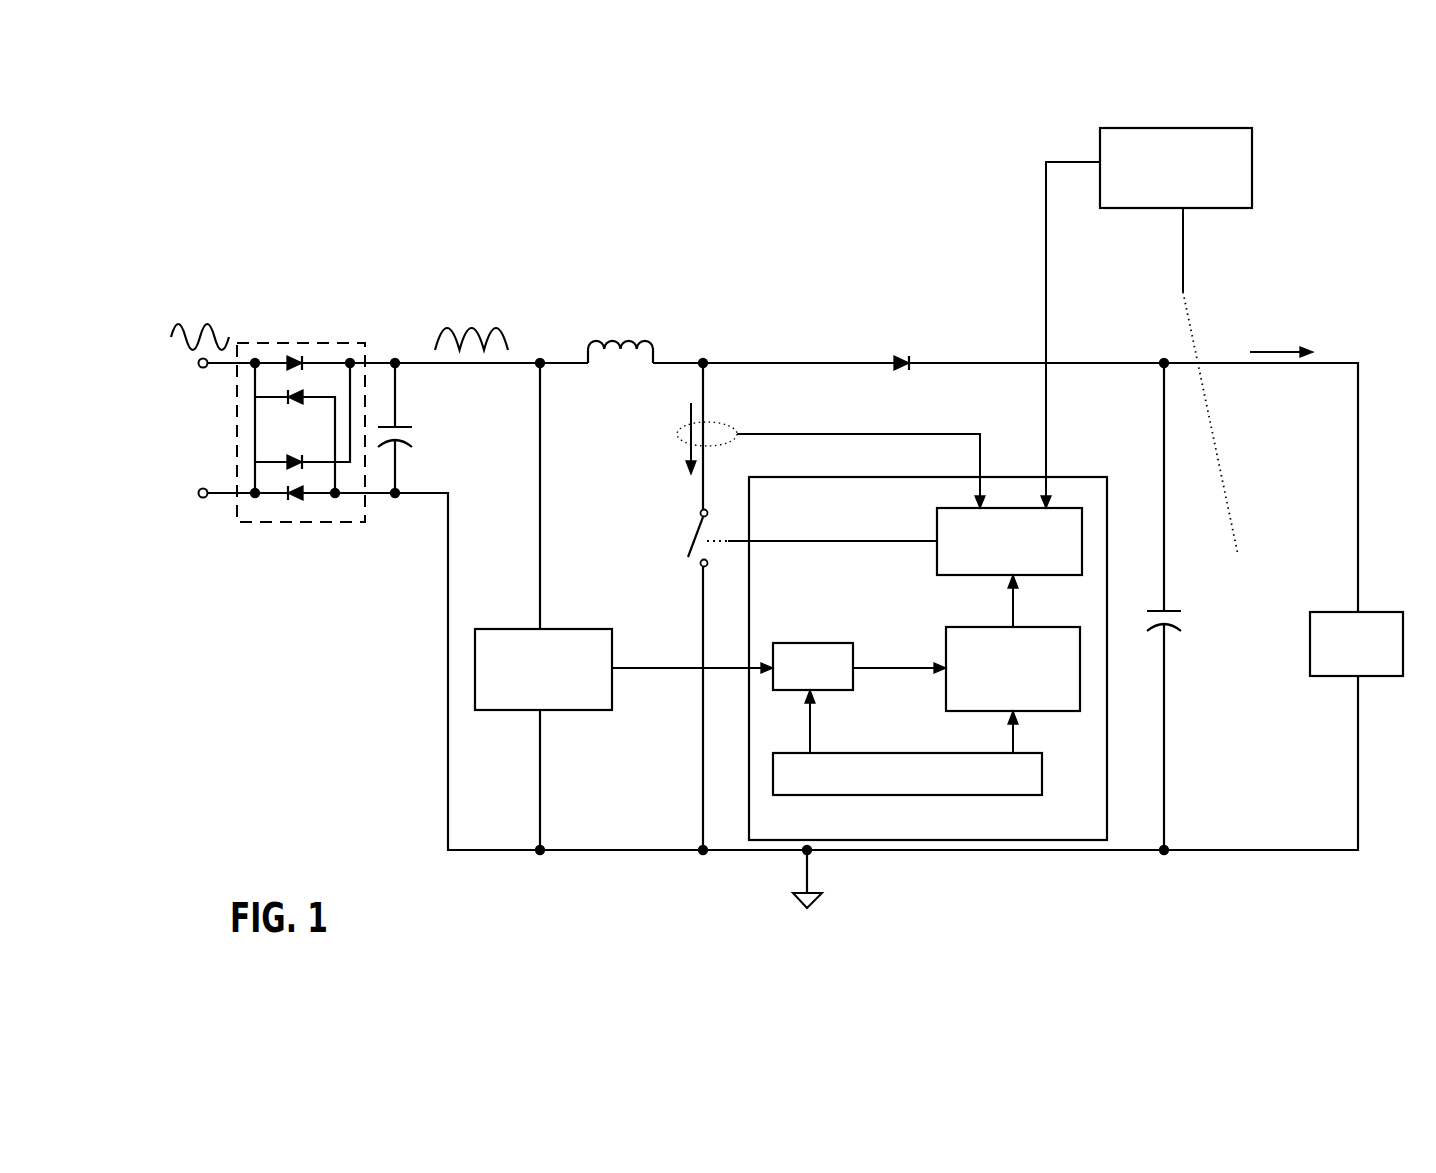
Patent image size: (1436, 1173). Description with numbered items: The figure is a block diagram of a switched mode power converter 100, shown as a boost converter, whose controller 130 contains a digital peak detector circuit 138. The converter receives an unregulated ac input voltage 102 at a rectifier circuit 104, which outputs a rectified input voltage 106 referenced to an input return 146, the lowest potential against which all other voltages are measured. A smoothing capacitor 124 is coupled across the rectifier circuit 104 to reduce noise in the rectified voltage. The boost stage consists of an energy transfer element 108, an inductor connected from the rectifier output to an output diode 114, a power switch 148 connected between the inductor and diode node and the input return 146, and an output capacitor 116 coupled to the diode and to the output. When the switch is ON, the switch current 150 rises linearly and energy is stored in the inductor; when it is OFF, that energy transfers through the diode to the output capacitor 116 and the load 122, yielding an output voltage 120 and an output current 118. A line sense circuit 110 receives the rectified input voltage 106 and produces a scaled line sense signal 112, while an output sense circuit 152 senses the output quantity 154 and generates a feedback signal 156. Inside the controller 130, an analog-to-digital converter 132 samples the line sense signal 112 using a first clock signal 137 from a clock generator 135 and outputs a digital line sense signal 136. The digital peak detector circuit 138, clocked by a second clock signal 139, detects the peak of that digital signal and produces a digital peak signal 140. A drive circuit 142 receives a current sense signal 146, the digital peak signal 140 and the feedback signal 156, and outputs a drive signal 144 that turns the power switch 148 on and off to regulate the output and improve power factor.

The switched mode power converter 100 is at (792, 135).
The input voltage VAC 102 is at (210, 420).
The rectifier circuit 104 is at (305, 340).
The rectified input voltage VRECT 106 is at (472, 425).
The energy transfer element L1 108 is at (627, 335).
The line sense circuit 110 is at (562, 625).
The line sense signal ULSEN 112 is at (637, 673).
The output diode D1 114 is at (905, 335).
The output capacitor C1 116 is at (1152, 585).
The output current IO 118 is at (1278, 328).
The output voltage VO 120 is at (1207, 611).
The load 122 is at (1350, 612).
The capacitor C2 124 is at (407, 407).
The controller 130 is at (1070, 474).
The analog-to-digital converter (ADC) 132 is at (803, 642).
The clock generator 135 is at (1043, 780).
The digital line sense signal UDSEN 136 is at (883, 643).
The first clock signal UCLK1 137 is at (807, 723).
The digital peak detector circuit 138 is at (1037, 717).
The second clock signal UCLK2 139 is at (938, 725).
The digital peak signal UDPK 140 is at (1012, 612).
The drive circuit 142 is at (937, 515).
The drive signal UDRIVE 144 is at (788, 548).
The input return / current sense signal 146 is at (963, 430).
The power switch S1 148 is at (687, 530).
The switch current ID 150 is at (685, 448).
The output sense circuit 152 is at (1215, 122).
The output quantity UO 154 is at (1210, 263).
The feedback signal UFB 156 is at (1043, 262).